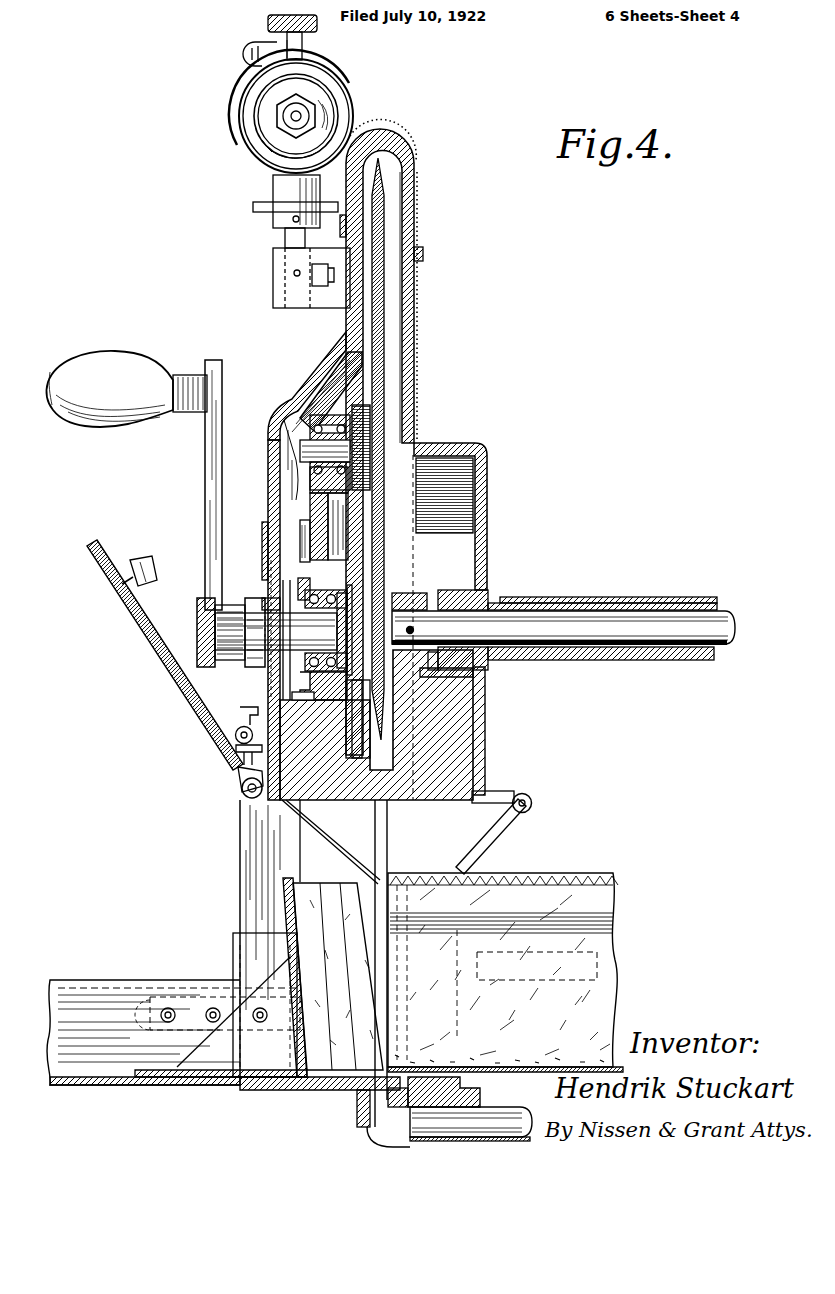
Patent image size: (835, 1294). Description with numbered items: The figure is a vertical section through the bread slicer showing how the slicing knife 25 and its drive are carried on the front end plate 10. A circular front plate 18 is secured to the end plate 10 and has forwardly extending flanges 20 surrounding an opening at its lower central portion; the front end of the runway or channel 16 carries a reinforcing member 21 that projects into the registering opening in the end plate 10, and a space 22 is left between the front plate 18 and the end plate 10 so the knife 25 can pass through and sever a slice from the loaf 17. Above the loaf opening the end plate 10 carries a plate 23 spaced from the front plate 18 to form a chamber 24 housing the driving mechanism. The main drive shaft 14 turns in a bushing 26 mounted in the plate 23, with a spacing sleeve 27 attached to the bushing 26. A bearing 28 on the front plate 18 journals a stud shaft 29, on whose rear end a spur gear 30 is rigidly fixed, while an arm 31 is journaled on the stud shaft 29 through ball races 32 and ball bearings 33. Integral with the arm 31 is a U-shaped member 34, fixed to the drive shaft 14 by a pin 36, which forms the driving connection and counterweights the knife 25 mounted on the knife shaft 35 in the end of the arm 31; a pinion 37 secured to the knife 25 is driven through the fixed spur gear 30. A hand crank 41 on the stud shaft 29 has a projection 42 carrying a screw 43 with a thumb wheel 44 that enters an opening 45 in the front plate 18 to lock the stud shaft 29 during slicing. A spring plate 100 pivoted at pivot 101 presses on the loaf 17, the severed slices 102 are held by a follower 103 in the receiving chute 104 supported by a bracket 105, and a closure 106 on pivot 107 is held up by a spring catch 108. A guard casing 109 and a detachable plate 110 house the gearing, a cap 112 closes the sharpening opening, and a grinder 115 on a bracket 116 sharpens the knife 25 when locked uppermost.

The end plate 10 is at (402, 1104).
The main drive shaft 14 is at (690, 614).
The runway or channel 16 is at (502, 975).
The loaf of bread 17 is at (590, 874).
The circular front plate 18 is at (268, 456).
The forwardly extending flanges 20 is at (240, 850).
The reinforcing member 21 is at (462, 1090).
The space 22 is at (358, 1100).
The plate 23 is at (480, 726).
The chamber 24 is at (462, 502).
The slicing knife 25 is at (377, 355).
The bushing 26 is at (473, 594).
The spacing sleeve 27 is at (592, 600).
The bearing 28 is at (266, 560).
The stud shaft 29 is at (303, 672).
The spur gear 30 is at (353, 728).
The arm 31 is at (310, 532).
The ball races 32 is at (304, 578).
The ball bearings 33 is at (343, 590).
The U-shaped member 34 is at (300, 812).
The knife shaft 35 is at (330, 374).
The pin 36 is at (412, 630).
The pinion 37 is at (358, 410).
The hand crank 41 is at (206, 486).
The projection 42 is at (225, 670).
The screw 43 is at (222, 622).
The thumb wheel 44 is at (197, 630).
The opening 45 is at (266, 598).
The spring plate 100 is at (492, 840).
The pivot 101 is at (531, 801).
The slices 102 is at (332, 883).
The supporting plate or follower 103 is at (287, 922).
The receiving chute 104 is at (115, 1082).
The bracket 105 is at (213, 1058).
The closure 106 is at (192, 714).
The pivot 107 is at (243, 796).
The spring catch 108 is at (236, 770).
The guard plate or casing 109 is at (284, 412).
The detachable plate 110 is at (418, 407).
The cap 112 is at (418, 188).
The grinder 115 is at (273, 189).
The bracket 116 is at (273, 275).